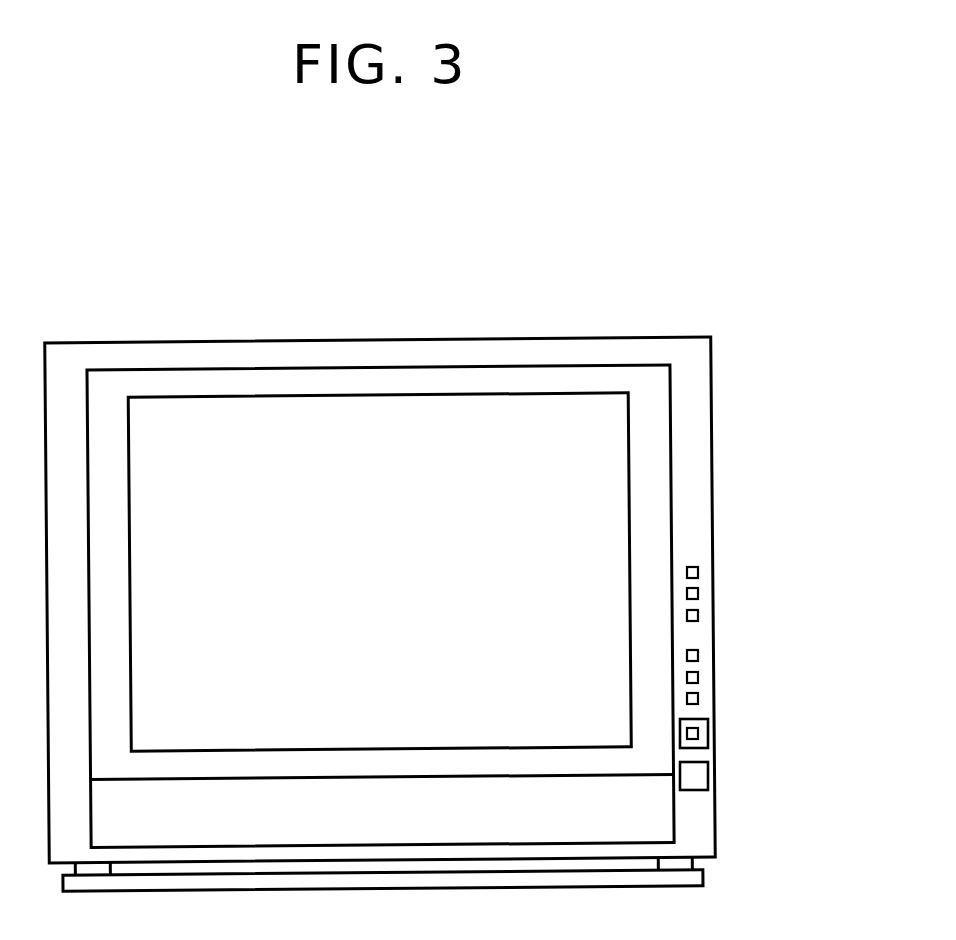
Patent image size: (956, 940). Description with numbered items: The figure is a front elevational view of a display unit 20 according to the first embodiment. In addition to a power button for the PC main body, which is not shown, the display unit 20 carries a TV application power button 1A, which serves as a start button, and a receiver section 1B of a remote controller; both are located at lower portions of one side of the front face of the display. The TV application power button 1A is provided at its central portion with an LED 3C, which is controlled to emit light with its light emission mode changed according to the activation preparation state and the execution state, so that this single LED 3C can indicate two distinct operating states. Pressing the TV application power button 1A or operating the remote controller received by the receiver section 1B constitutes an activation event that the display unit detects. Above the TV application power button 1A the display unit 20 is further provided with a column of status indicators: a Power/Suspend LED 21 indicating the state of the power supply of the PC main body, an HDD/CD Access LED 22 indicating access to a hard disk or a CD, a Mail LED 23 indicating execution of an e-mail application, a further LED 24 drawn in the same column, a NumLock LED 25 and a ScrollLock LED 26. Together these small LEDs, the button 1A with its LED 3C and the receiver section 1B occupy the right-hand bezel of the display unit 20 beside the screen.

The display unit 20 is at (344, 306).
The Power/Suspend LED 21 is at (698, 571).
The HDD/CD Access LED 22 is at (698, 593).
The Mail LED 23 is at (698, 615).
The operation button 24 is at (698, 654).
The NumLock LED 25 is at (698, 676).
The ScrollLock LED 26 is at (698, 698).
The LED 3C is at (703, 722).
The TV application power button 1A is at (708, 736).
The receiver section 1B is at (708, 777).